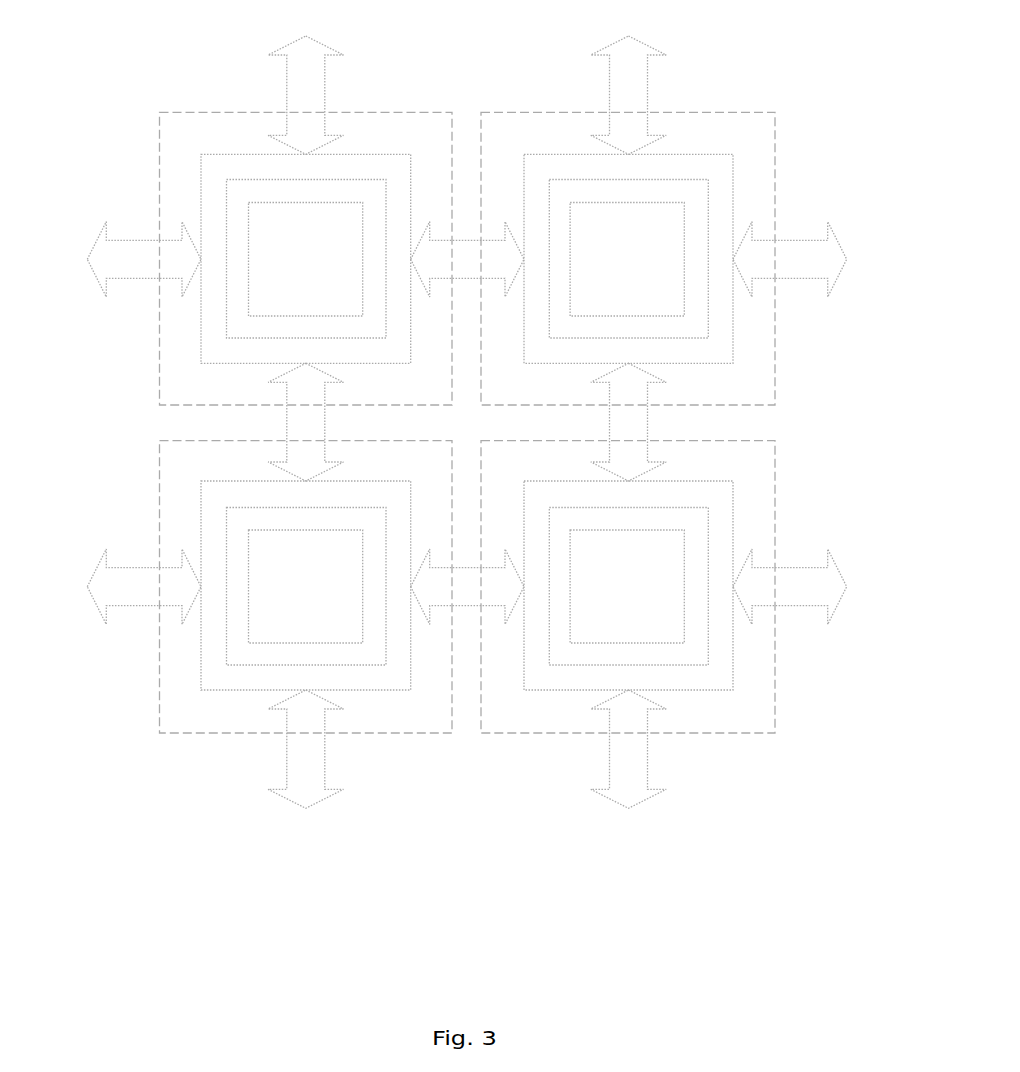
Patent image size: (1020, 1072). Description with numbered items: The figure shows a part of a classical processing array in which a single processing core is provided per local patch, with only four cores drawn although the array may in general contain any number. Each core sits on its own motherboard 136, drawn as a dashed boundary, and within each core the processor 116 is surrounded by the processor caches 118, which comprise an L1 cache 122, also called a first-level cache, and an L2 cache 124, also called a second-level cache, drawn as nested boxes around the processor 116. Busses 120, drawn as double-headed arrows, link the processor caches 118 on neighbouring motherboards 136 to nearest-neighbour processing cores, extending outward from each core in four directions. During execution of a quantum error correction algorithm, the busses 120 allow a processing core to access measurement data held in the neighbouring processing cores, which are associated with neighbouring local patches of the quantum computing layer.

The processor 116 is at (277, 274).
The processor cache 118 is at (477, 409).
The bus 120 is at (310, 77).
The L1 cache 122 is at (237, 203).
The L2 cache 124 is at (215, 227).
The motherboard 136 is at (160, 112).